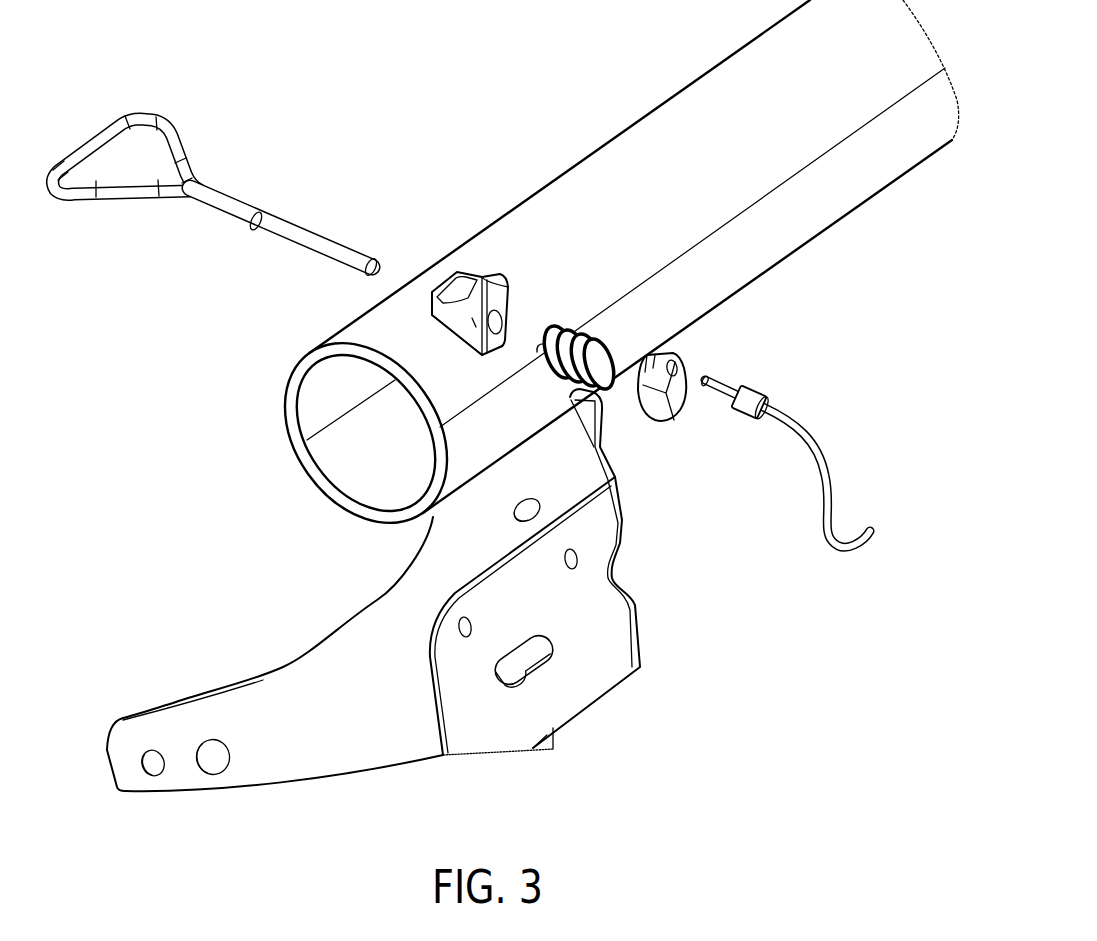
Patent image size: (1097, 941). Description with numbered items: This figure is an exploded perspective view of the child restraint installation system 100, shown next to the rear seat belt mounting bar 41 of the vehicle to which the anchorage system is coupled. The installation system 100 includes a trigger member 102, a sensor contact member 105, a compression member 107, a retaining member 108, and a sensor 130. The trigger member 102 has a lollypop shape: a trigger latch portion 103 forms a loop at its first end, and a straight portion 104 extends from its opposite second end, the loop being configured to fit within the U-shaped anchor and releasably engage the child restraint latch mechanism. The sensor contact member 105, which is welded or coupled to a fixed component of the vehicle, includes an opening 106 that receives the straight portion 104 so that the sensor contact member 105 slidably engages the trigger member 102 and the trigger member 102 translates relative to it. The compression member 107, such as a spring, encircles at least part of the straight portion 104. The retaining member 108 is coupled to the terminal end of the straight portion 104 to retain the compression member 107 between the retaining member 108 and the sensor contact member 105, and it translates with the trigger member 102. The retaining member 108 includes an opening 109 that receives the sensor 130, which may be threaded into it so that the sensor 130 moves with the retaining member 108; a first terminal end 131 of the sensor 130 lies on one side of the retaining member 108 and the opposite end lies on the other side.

The rear seat belt mounting bar 41 is at (762, 180).
The child restraint installation system 100 is at (258, 105).
The trigger member 102 is at (211, 178).
The trigger latch portion 103 is at (73, 147).
The straight portion 104 is at (212, 210).
The sensor contact member 105 is at (480, 285).
The opening 106 is at (470, 324).
The compression member 107 is at (588, 343).
The retaining member 108 is at (657, 380).
The opening 109 is at (754, 438).
The sensor 130 is at (750, 397).
The first terminal end 131 is at (706, 408).